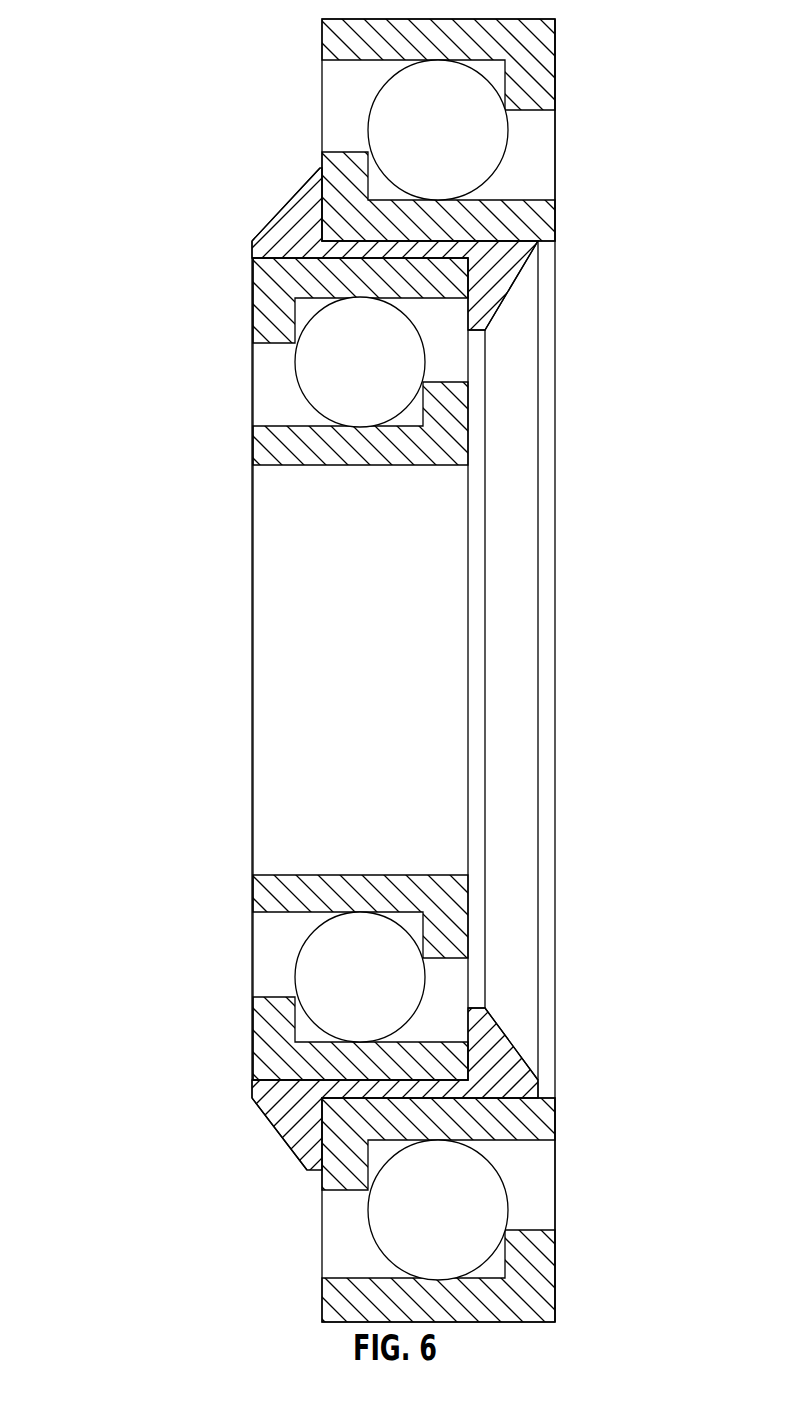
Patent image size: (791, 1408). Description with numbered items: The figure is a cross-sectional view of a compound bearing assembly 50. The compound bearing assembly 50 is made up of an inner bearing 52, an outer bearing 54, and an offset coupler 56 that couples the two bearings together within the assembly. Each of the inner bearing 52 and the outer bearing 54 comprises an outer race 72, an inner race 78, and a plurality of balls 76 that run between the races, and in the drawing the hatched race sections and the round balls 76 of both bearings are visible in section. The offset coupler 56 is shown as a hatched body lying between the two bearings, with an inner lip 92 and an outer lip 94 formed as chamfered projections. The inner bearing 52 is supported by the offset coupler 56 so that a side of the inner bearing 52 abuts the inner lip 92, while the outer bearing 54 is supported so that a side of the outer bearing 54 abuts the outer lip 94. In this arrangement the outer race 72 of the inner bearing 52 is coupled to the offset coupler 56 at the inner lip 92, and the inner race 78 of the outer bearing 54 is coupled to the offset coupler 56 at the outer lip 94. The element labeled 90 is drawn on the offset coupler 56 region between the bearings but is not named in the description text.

The compound bearing assembly 50 is at (114, 44).
The inner bearing 52 is at (232, 374).
The outer bearing 54 is at (568, 79).
The offset coupler 56 is at (242, 1114).
The outer race 72 is at (322, 50).
The balls 76 is at (398, 123).
The inner race 78 is at (555, 237).
The spacer ring 90 is at (497, 240).
The inner lip 92 is at (505, 303).
The outer lip 94 is at (273, 217).